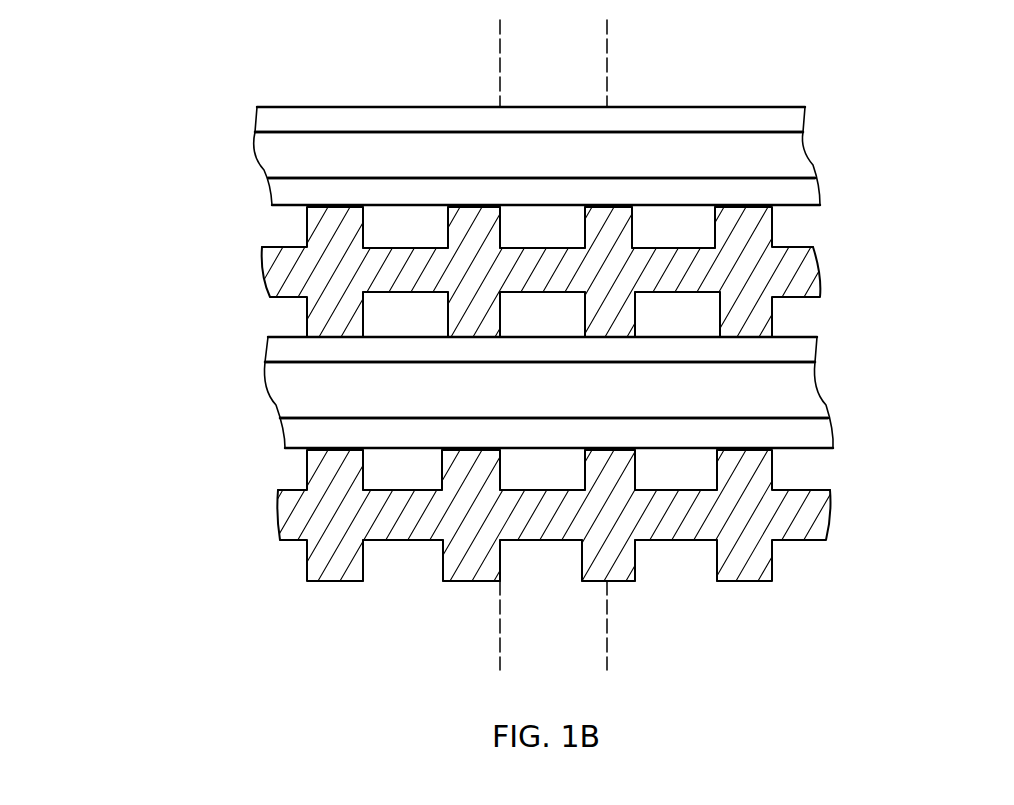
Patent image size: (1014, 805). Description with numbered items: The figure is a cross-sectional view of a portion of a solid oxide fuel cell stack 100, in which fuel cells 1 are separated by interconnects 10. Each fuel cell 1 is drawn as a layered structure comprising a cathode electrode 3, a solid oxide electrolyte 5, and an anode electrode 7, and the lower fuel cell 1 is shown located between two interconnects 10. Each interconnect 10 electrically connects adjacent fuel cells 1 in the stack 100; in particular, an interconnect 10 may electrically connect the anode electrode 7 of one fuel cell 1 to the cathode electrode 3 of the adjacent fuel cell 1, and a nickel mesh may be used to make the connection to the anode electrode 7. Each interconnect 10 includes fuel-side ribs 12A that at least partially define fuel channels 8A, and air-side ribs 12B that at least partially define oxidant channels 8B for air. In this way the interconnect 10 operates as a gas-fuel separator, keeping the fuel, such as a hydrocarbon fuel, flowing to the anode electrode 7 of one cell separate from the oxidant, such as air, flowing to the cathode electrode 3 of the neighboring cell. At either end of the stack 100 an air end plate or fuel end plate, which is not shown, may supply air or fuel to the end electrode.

The solid oxide fuel cell stack 100 is at (130, 216).
The fuel cell 1 is at (542, 274).
The cathode electrode 3 is at (257, 121).
The solid oxide electrolyte 5 is at (258, 158).
The anode electrode 7 is at (270, 196).
The interconnect 10 is at (546, 394).
The fuel-side ribs 12A is at (307, 232).
The air-side ribs 12B is at (307, 317).
The fuel channels 8A is at (694, 486).
The oxidant channels 8B is at (694, 577).